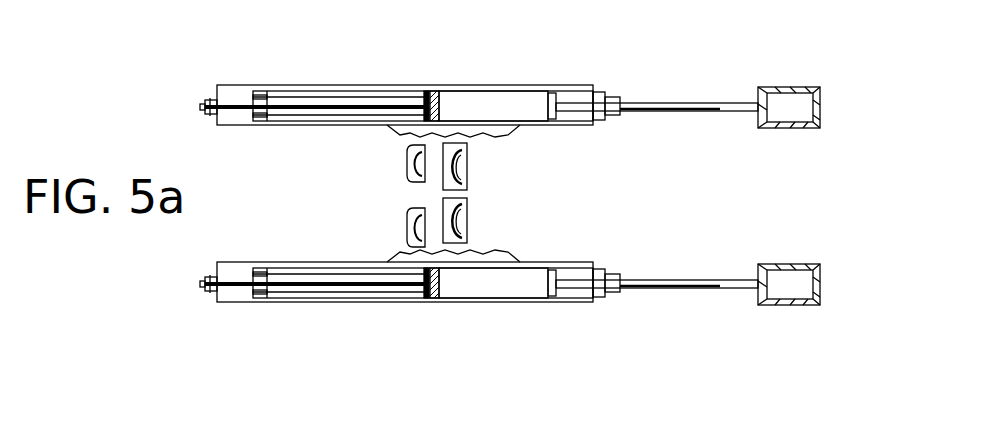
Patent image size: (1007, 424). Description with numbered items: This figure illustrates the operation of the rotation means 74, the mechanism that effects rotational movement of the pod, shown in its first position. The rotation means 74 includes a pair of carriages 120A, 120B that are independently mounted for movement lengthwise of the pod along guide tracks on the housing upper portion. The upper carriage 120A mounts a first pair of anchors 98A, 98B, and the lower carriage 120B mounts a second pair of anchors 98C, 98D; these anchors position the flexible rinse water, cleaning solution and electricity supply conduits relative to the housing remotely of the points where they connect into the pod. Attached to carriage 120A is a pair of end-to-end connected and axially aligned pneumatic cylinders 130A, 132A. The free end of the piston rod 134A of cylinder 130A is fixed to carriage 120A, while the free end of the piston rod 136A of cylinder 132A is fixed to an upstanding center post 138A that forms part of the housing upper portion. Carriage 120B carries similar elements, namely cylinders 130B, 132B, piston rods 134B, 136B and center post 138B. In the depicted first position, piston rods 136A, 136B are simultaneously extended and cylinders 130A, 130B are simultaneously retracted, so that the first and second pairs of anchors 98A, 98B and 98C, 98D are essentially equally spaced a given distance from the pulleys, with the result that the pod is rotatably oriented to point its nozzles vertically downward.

The rotation means 74 is at (145, 90).
The carriage 120A is at (233, 85).
The carriage 120B is at (232, 300).
The pneumatic cylinder 130A is at (350, 92).
The pneumatic cylinder 130B is at (310, 298).
The pneumatic cylinder 132A is at (485, 97).
The pneumatic cylinder 132B is at (465, 300).
The piston rod 134A is at (235, 115).
The piston rod 134B is at (235, 278).
The piston rod 136A is at (665, 103).
The piston rod 136B is at (660, 290).
The center post 138A is at (790, 88).
The center post 138B is at (805, 305).
The first anchor 98A is at (462, 172).
The second anchor 98B is at (407, 165).
The third anchor 98C is at (465, 228).
The fourth anchor 98D is at (407, 224).